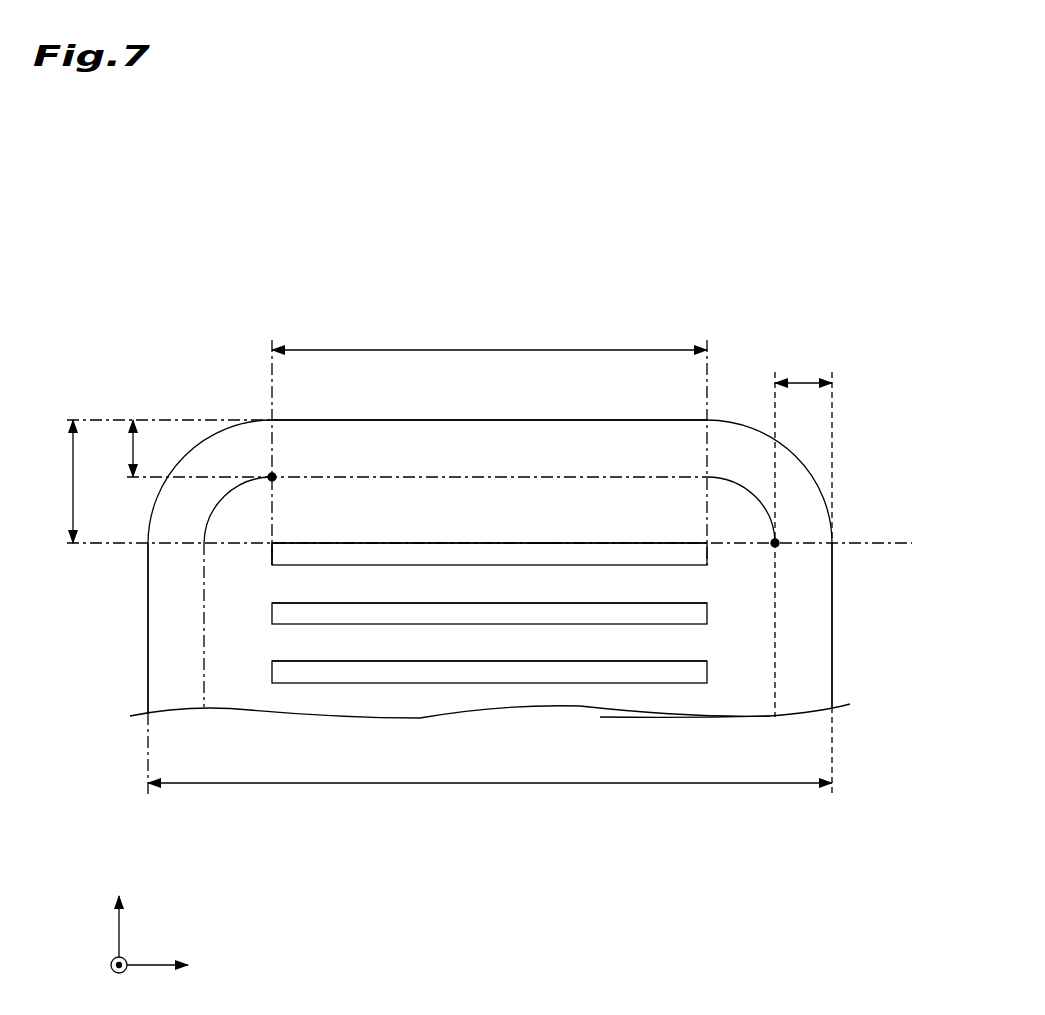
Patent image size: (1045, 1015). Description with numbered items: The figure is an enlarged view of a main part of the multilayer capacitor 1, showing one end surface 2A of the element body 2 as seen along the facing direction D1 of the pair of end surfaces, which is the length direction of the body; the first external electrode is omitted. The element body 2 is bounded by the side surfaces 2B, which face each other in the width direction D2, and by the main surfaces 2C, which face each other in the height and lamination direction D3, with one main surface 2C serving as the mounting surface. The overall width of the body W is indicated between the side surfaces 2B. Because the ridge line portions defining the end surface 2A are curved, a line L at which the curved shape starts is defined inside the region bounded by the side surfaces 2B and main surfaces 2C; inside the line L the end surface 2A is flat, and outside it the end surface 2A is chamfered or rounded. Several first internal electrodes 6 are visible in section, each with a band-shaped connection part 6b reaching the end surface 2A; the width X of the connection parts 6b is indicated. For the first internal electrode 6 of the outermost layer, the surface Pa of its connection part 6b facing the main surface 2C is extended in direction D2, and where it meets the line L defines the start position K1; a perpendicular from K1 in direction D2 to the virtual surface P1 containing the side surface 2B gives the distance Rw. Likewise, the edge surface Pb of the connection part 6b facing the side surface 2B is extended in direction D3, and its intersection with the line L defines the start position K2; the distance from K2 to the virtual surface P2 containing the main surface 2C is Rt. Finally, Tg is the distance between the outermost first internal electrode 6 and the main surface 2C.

The multilayer capacitor 1 is at (200, 290).
The element body 2 is at (846, 475).
The end surface 2A is at (733, 693).
The side surface 2B is at (148, 676).
The main surface 2C is at (378, 420).
The first internal electrode 6 is at (639, 541).
The connection part 6b is at (418, 555).
The surface of the connection part on the outer layer side Pa is at (543, 543).
The surface of the connection part on the edge portion side Pb is at (272, 556).
The line at which the curved shape starts L is at (204, 628).
The start position of the curved shape on the side surface side K1 is at (775, 543).
The start position of the curved shape on the main surface side K2 is at (272, 477).
The virtual surface including the side surface P1 is at (832, 412).
The virtual surface including the main surface P2 is at (168, 418).
The electrode width X is at (489, 333).
The distance from start position K1 to virtual surface P1 Rw is at (803, 368).
The distance between the outermost first internal electrode and the main surface Tg is at (53, 481).
The distance from start position K2 to virtual surface P2 Rt is at (115, 448).
The body width W is at (490, 801).
The facing direction of the pair of end surfaces D1 is at (99, 981).
The facing direction of the pair of side surfaces D2 is at (180, 966).
The facing direction of the pair of main surfaces D3 is at (120, 910).